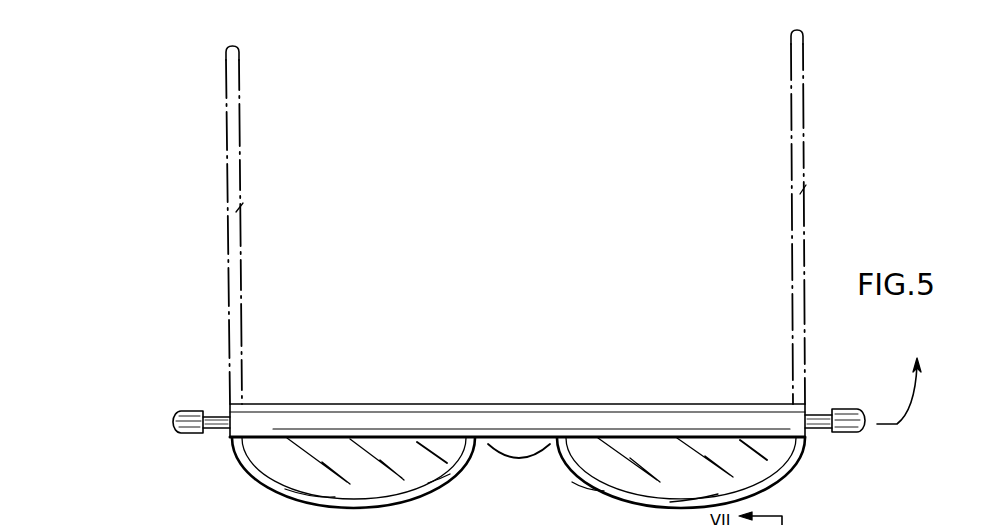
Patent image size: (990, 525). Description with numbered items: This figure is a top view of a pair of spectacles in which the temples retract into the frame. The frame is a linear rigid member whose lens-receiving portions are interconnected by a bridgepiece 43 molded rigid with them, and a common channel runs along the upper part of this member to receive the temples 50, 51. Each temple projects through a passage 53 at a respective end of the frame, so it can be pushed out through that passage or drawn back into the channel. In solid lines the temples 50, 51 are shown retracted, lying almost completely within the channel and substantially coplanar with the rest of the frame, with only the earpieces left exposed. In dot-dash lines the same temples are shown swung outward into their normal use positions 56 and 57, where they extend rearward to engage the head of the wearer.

The bridgepiece 43 is at (478, 524).
The temple 50 is at (216, 432).
The temple 51 is at (827, 410).
The passage 53 is at (552, 481).
The temple in normal use position 56 is at (243, 210).
The temple in normal use position 57 is at (805, 192).